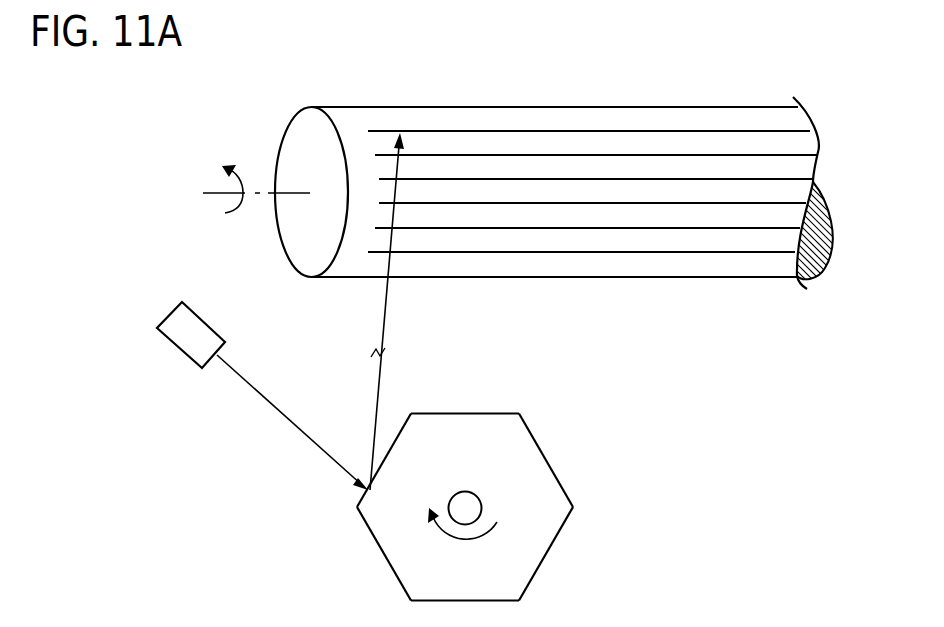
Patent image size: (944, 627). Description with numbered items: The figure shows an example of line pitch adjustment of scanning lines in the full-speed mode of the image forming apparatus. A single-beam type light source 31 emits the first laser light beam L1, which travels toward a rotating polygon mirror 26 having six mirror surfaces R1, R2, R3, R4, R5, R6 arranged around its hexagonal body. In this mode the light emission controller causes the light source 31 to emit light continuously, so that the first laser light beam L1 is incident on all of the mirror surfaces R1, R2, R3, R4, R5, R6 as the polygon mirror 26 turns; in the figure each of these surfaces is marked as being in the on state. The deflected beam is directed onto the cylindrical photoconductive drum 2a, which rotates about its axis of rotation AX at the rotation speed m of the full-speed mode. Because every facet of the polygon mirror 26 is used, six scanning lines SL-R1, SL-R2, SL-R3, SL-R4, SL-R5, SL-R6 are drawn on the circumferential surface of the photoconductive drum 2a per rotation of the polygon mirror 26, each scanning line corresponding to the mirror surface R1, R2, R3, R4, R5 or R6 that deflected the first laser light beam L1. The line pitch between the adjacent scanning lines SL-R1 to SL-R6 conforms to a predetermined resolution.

The photoconductive drum 2a is at (347, 106).
The polygon mirror 26 is at (464, 499).
The light source 31 is at (174, 346).
The axis of rotation AX is at (207, 195).
The rotation speed m is at (221, 185).
The first laser light beam L1 is at (268, 405).
The scanning line SL-R1 is at (445, 131).
The scanning line SL-R2 is at (550, 155).
The scanning line SL-R3 is at (645, 179).
The scanning line SL-R4 is at (735, 203).
The scanning line SL-R5 is at (622, 229).
The scanning line SL-R6 is at (735, 253).
The mirror surface R1 is at (389, 461).
The mirror surface R2 is at (390, 554).
The mirror surface R3 is at (465, 586).
The mirror surface R4 is at (543, 554).
The mirror surface R5 is at (543, 461).
The mirror surface R6 is at (465, 431).